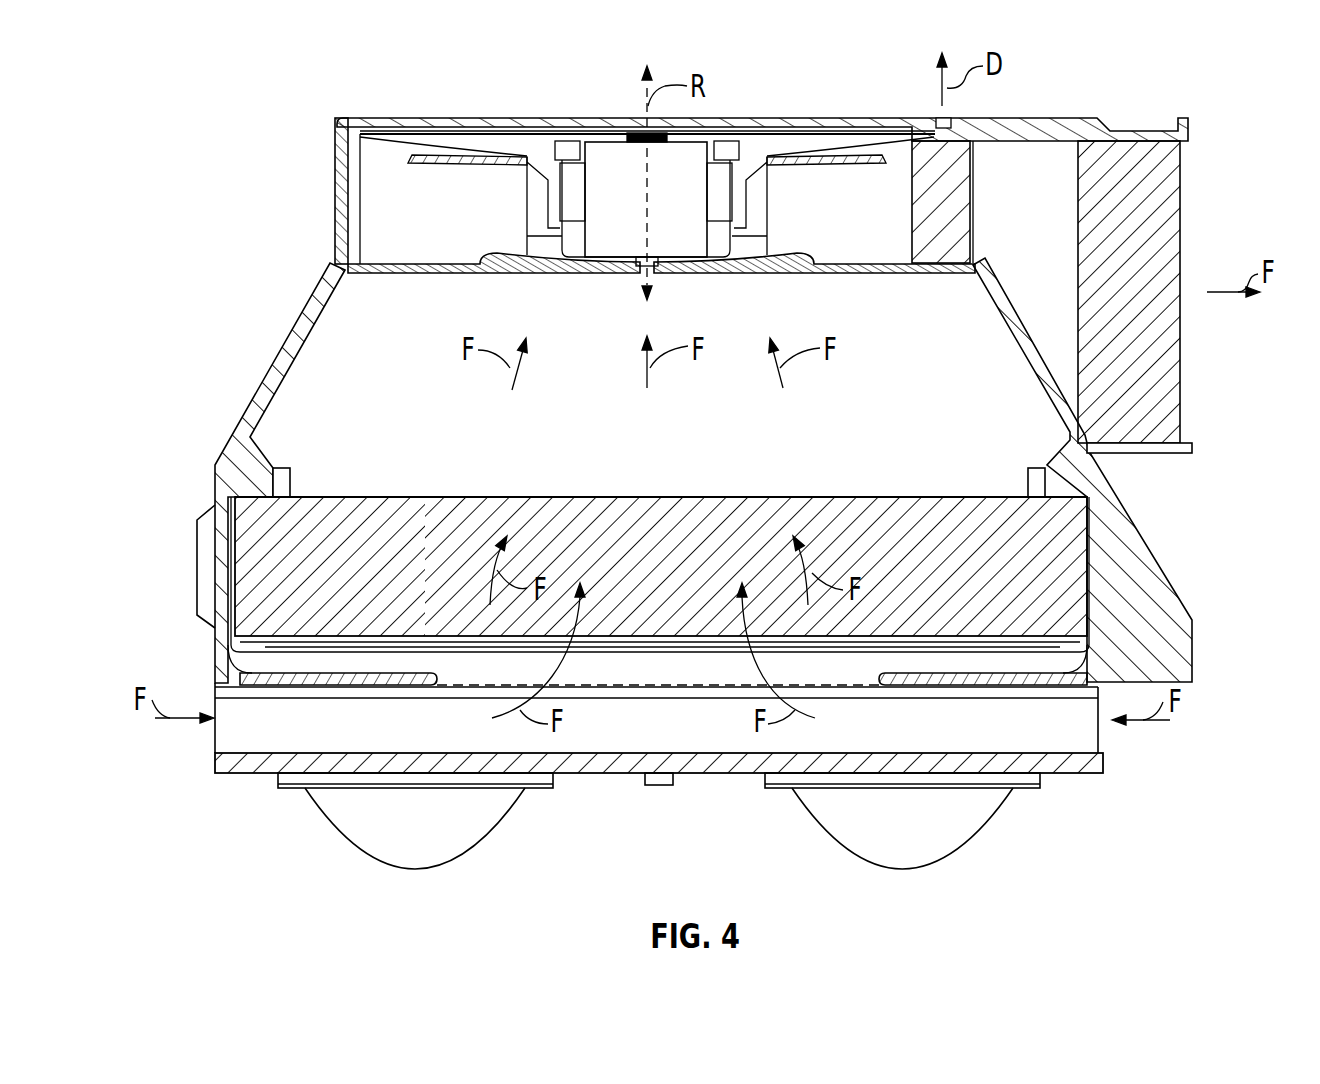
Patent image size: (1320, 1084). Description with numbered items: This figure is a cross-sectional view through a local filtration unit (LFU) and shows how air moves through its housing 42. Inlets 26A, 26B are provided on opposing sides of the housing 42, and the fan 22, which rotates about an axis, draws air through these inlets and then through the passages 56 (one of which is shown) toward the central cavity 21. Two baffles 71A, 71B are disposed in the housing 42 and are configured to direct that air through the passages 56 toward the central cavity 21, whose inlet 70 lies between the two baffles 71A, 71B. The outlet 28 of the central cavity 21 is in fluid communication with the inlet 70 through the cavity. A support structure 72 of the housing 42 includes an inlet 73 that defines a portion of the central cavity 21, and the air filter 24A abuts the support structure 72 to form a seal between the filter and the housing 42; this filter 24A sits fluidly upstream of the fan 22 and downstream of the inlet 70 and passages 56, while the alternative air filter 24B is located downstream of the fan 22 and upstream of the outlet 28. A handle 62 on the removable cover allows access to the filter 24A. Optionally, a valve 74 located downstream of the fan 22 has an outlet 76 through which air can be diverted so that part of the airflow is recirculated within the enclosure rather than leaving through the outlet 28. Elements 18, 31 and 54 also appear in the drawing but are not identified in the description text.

The loudspeaker 18 is at (360, 835).
The central cavity 21 is at (346, 373).
The fan 22 is at (612, 160).
The air filter 24A is at (642, 567).
The air filter 24B is at (1128, 155).
The inlet 26A is at (215, 745).
The inlet 26B is at (1100, 740).
The outlet 28 is at (1208, 166).
The connector 31 is at (657, 790).
The housing 42 is at (318, 292).
The frame 54 is at (235, 700).
The passages 56 is at (673, 733).
The handle 62 is at (205, 567).
The inlet 70 is at (620, 687).
The baffle 71A is at (288, 690).
The baffle 71B is at (1048, 690).
The support structure 72 is at (284, 467).
The inlet 73 is at (878, 497).
The valve 74 is at (960, 200).
The outlet 76 is at (940, 130).